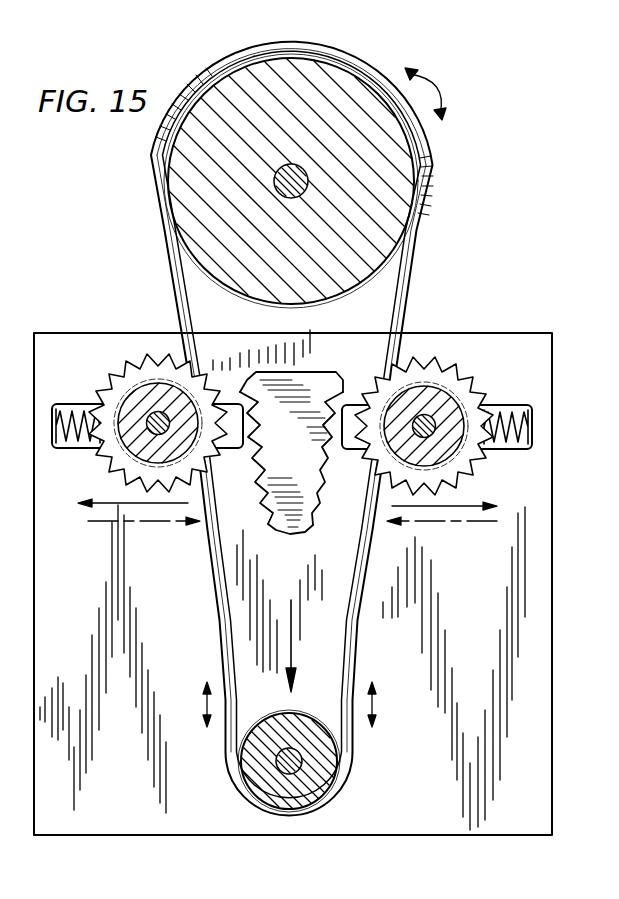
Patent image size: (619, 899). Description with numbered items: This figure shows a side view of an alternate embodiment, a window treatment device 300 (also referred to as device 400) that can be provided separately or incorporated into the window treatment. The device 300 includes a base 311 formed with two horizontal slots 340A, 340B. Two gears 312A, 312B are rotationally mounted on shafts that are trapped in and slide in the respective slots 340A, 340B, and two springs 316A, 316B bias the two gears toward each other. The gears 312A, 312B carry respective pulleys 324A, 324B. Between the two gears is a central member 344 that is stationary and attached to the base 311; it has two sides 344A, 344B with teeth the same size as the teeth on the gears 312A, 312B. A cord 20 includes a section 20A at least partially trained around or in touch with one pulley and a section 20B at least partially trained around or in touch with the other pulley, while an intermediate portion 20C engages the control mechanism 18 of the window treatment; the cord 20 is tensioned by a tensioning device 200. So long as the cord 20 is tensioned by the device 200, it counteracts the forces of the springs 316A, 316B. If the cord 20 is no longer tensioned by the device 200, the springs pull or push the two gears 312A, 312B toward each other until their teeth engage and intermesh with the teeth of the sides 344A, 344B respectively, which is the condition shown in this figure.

The control mechanism 18 is at (427, 140).
The cord 20 is at (415, 268).
The cord section 20A is at (175, 280).
The cord section 20B is at (380, 458).
The intermediate portion 20C is at (338, 51).
The tensioning device 200 is at (322, 755).
The device 300 is at (480, 84).
The base 311 is at (552, 683).
The gear 312A is at (142, 358).
The gear 312B is at (430, 357).
The spring 316A is at (52, 448).
The spring 316B is at (523, 449).
The pulley 324A is at (147, 468).
The pulley 324B is at (452, 392).
The horizontal slot 340A is at (80, 404).
The horizontal slot 340B is at (497, 405).
The central member 344 is at (292, 533).
The side 344A is at (265, 522).
The side 344B is at (323, 498).
The device 400 is at (617, 62).